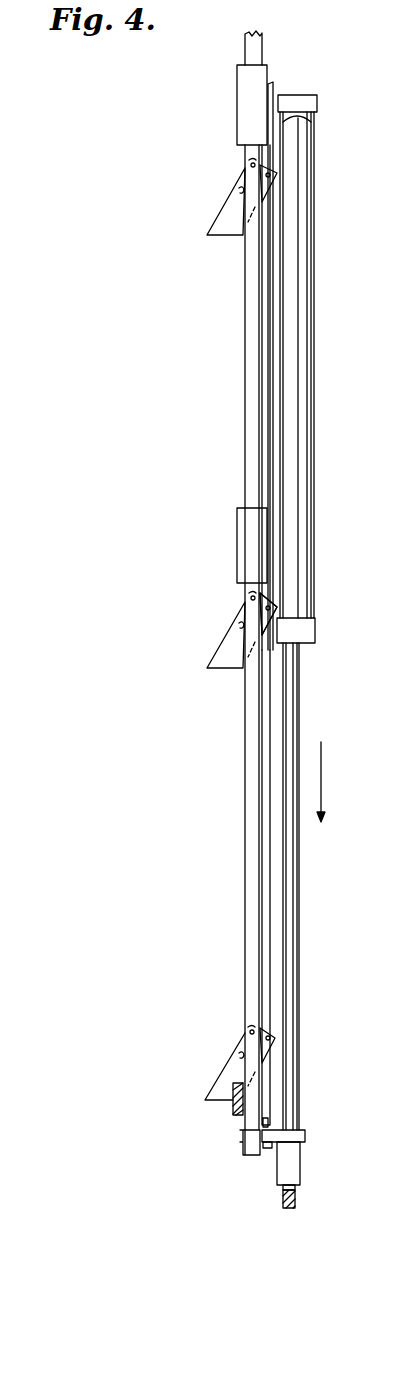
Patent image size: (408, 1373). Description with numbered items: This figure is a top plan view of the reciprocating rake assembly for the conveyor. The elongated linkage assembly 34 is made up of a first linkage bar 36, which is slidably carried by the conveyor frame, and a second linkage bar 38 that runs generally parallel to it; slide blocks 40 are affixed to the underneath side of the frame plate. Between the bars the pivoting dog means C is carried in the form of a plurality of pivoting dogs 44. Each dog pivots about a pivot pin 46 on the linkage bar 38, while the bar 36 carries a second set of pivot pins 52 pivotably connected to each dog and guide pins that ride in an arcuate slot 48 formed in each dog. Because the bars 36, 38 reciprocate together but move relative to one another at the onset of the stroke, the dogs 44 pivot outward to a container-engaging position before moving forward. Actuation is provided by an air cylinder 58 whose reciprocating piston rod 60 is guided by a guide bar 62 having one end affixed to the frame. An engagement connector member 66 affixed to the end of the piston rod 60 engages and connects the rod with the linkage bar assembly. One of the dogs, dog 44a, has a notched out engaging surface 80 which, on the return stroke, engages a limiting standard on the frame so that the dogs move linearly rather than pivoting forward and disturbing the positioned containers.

The linkage assembly 34 is at (262, 421).
The first linkage bar 36 is at (245, 336).
The second linkage bar 38 is at (268, 815).
The slide blocks 40 is at (237, 524).
The pivoting dogs 44 is at (229, 197).
The dog 44a is at (210, 1100).
The pivot pin 46 is at (263, 603).
The arcuate slot 48 is at (240, 625).
The pivot pins 52 is at (251, 598).
The air cylinder 58 is at (307, 400).
The piston rod 60 is at (302, 877).
The guide bar 62 is at (288, 1003).
The engagement connector member 66 is at (306, 1137).
The notched out engaging surface 80 is at (235, 1110).
The dog means C is at (233, 1049).